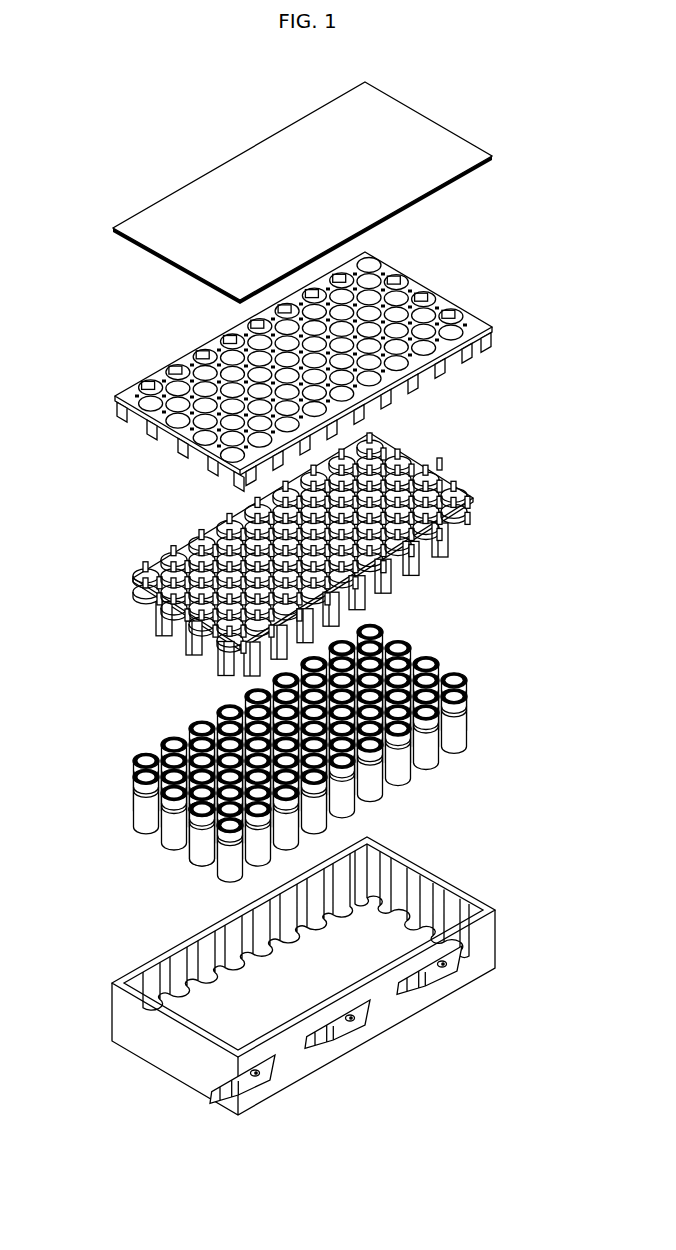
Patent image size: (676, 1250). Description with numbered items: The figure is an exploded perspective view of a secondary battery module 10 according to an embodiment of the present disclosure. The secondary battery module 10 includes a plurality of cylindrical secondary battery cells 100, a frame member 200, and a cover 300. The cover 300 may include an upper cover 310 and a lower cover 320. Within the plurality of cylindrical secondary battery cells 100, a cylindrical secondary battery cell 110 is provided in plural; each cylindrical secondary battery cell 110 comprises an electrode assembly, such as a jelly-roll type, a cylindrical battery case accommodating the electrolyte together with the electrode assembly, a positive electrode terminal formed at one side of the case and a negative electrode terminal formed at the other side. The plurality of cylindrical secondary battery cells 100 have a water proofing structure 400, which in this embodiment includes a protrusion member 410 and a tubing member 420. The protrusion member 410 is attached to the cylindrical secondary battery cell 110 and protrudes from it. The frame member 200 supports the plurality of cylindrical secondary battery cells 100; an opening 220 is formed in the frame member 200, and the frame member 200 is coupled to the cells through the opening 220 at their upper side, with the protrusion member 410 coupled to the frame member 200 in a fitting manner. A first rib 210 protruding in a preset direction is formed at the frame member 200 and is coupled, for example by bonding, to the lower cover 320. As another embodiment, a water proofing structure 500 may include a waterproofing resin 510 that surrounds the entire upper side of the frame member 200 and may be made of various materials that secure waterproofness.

The secondary battery module 10 is at (82, 90).
The plurality of cylindrical secondary battery cells 100 is at (488, 677).
The cylindrical secondary battery cell 110 is at (487, 733).
The frame member 200 is at (499, 472).
The first rib 210 is at (448, 546).
The opening 220 is at (440, 466).
The cover 300 is at (518, 903).
The upper cover 310 is at (480, 325).
The lower cover 320 is at (465, 902).
The water proofing structure 400 is at (101, 884).
The protrusion member 410 is at (163, 812).
The tubing member 420 is at (183, 830).
The water proofing structure 500 is at (502, 131).
The waterproofing resin 510 is at (438, 133).